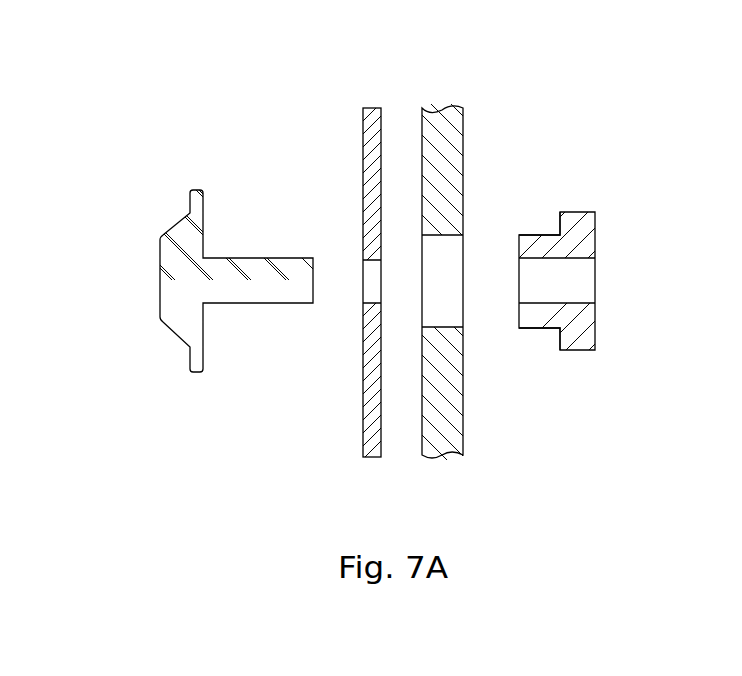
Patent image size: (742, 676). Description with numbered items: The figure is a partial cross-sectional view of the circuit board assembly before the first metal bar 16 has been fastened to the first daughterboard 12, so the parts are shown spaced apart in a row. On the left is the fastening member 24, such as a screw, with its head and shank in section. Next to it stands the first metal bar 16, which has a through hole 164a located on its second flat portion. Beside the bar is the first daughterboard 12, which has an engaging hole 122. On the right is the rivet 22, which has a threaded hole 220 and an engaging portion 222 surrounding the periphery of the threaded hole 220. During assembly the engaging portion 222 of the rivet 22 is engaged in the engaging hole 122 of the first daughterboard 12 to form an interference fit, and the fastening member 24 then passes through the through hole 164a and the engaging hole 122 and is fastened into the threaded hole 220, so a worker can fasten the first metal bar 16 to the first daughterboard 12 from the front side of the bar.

The fastening member 24 is at (160, 260).
The first metal bar 16 is at (371, 108).
The through hole 164a is at (368, 290).
The first daughterboard 12 is at (444, 118).
The engaging hole 122 is at (450, 305).
The rivet 22 is at (585, 212).
The engaging portion 222 is at (540, 238).
The threaded hole 220 is at (588, 280).